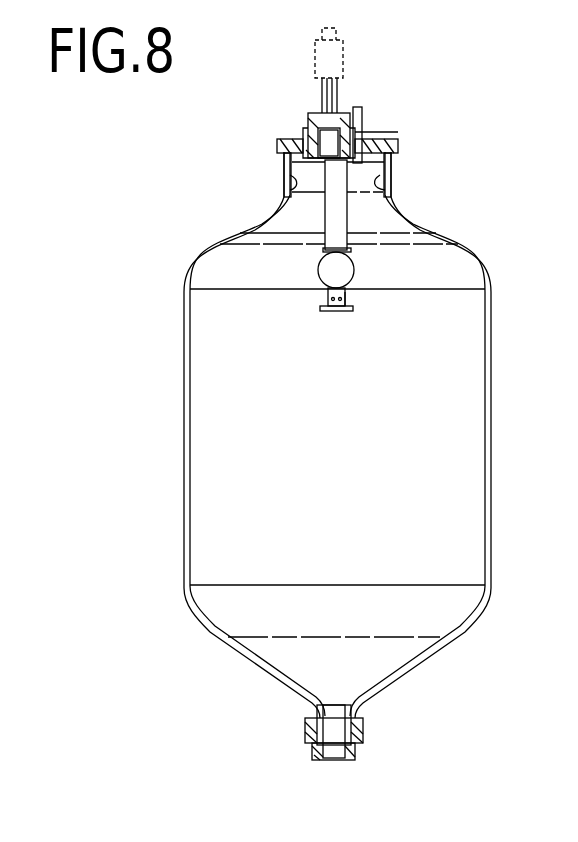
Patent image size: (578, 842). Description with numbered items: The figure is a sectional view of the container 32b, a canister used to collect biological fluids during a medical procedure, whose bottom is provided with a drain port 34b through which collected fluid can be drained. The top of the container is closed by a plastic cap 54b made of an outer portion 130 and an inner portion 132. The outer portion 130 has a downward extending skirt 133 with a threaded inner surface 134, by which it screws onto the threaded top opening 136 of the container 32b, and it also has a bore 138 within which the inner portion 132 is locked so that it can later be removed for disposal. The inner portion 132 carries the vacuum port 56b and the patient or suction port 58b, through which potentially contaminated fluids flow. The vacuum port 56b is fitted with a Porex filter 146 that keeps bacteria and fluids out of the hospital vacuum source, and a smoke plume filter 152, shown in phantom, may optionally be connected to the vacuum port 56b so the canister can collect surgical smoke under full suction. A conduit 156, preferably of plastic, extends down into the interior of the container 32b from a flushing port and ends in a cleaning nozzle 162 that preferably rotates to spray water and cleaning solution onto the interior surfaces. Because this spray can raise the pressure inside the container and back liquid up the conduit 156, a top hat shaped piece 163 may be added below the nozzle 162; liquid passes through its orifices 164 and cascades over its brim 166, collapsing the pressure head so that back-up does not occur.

The container 32b is at (160, 177).
The drain port 34b is at (335, 760).
The plastic cap 54b is at (288, 108).
The vacuum port 56b is at (342, 87).
The suction port 58b is at (365, 137).
The outer portion 130 is at (396, 147).
The inner portion 132 is at (372, 139).
The skirt 133 is at (288, 160).
The threaded inner surface 134 is at (385, 183).
The threaded top opening 136 is at (282, 179).
The bore 138 is at (384, 138).
The Porex filter 146 is at (290, 170).
The smoke plume filter 152 is at (313, 62).
The conduit 156 is at (343, 212).
The cleaning nozzle 162 is at (354, 268).
The top hat shaped piece 163 is at (328, 297).
The orifices 164 is at (355, 295).
The brim 166 is at (320, 311).